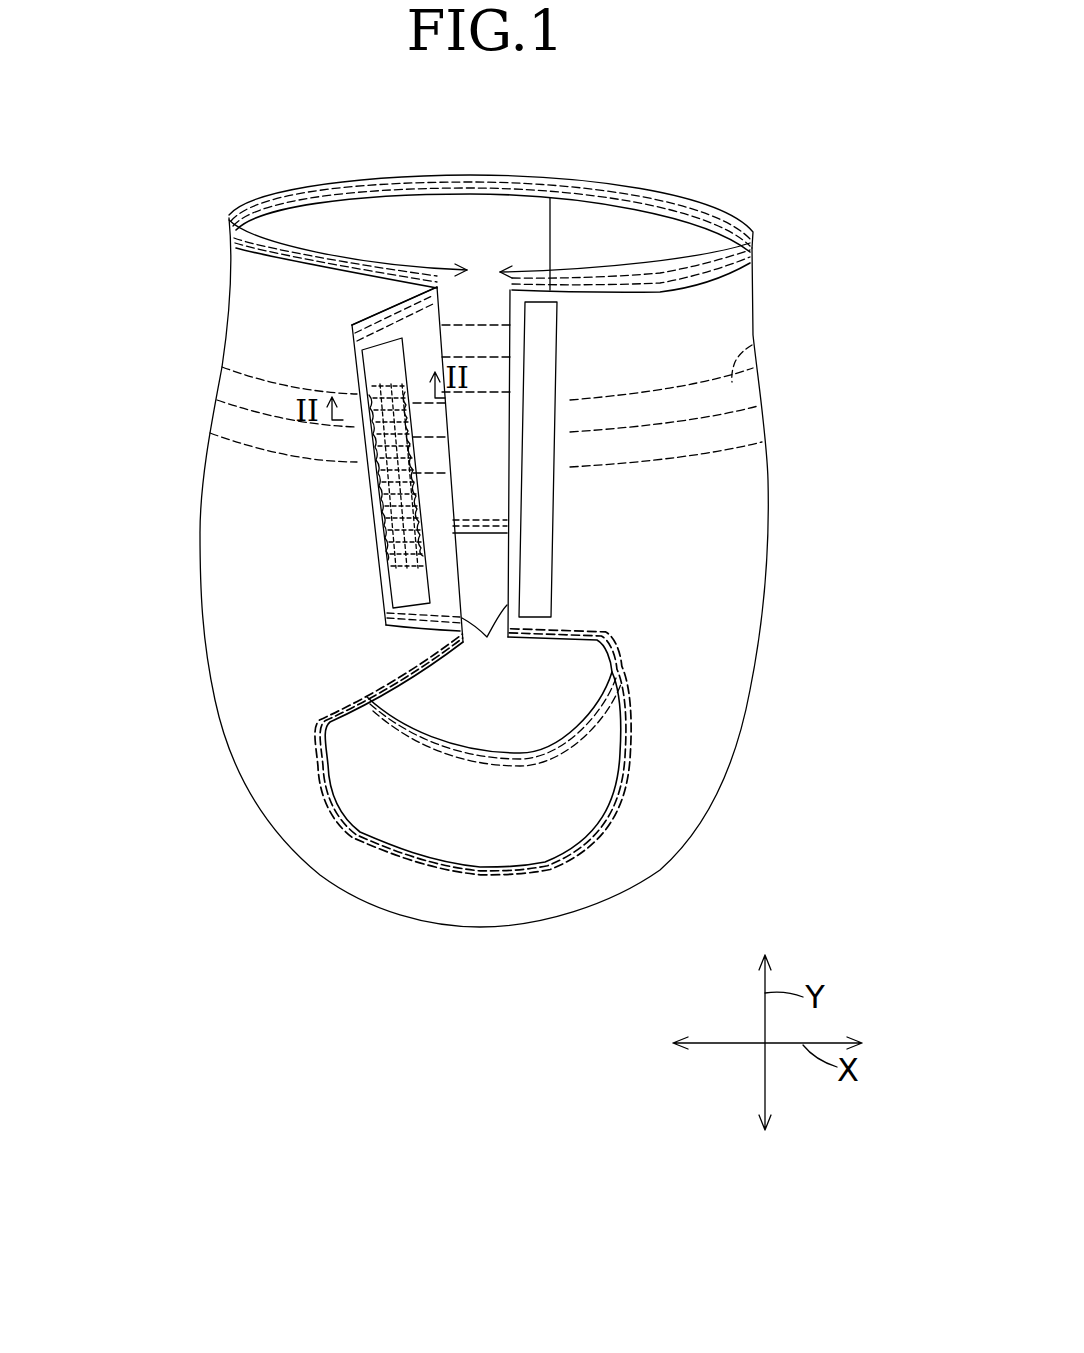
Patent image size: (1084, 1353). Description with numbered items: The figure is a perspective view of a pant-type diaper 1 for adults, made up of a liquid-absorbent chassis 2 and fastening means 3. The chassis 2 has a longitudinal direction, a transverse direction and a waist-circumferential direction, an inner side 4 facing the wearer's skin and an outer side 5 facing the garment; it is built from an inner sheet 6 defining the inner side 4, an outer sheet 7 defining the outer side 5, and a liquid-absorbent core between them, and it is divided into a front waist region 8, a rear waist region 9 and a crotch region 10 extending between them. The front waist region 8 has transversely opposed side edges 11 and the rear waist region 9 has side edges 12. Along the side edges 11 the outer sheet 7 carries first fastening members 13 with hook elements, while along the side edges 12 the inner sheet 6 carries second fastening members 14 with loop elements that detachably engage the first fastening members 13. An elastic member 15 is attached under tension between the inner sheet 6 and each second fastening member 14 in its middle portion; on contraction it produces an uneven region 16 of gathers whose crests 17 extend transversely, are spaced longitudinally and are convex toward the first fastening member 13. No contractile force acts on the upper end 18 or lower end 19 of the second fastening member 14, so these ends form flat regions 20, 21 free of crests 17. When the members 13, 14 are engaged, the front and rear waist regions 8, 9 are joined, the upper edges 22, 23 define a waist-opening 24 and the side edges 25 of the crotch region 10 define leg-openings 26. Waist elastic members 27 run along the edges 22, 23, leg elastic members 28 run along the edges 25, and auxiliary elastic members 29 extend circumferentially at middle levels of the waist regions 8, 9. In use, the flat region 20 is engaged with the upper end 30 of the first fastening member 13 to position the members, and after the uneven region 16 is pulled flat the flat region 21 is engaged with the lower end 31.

The diaper 1 is at (799, 142).
The liquid-absorbent chassis 2 is at (775, 258).
The fastening means 3 is at (484, 639).
The inner side 4 is at (487, 507).
The outer side 5 is at (260, 632).
The inner sheet 6 is at (620, 230).
The outer sheet 7 is at (230, 390).
The front waist region 8 is at (740, 503).
The rear waist region 9 is at (230, 482).
The crotch region 10 is at (483, 905).
The side edges of the front waist region 11 is at (585, 223).
The side edges of the rear waist region 12 is at (550, 198).
The first fastening member 13 is at (548, 358).
The second fastening member 14 is at (359, 519).
The elastic member 15 is at (397, 563).
The uneven region 16 is at (387, 450).
The crests 17 is at (377, 493).
The upper end of the second fastening member 18 is at (367, 347).
The lower end of the second fastening member 19 is at (414, 613).
The flat region 20 is at (423, 347).
The flat region 21 is at (417, 576).
The upper edge of the front waist region 22 is at (703, 213).
The upper edge of the rear waist region 23 is at (337, 197).
The waist-opening 24 is at (438, 249).
The side edges of the crotch region 25 is at (473, 752).
The leg-openings 26 is at (473, 752).
The waist elastic members 27 is at (277, 200).
The leg elastic members 28 is at (400, 733).
The auxiliary elastic members 29 is at (752, 345).
The upper end of the first fastening member 30 is at (543, 312).
The lower end of the first fastening member 31 is at (533, 615).